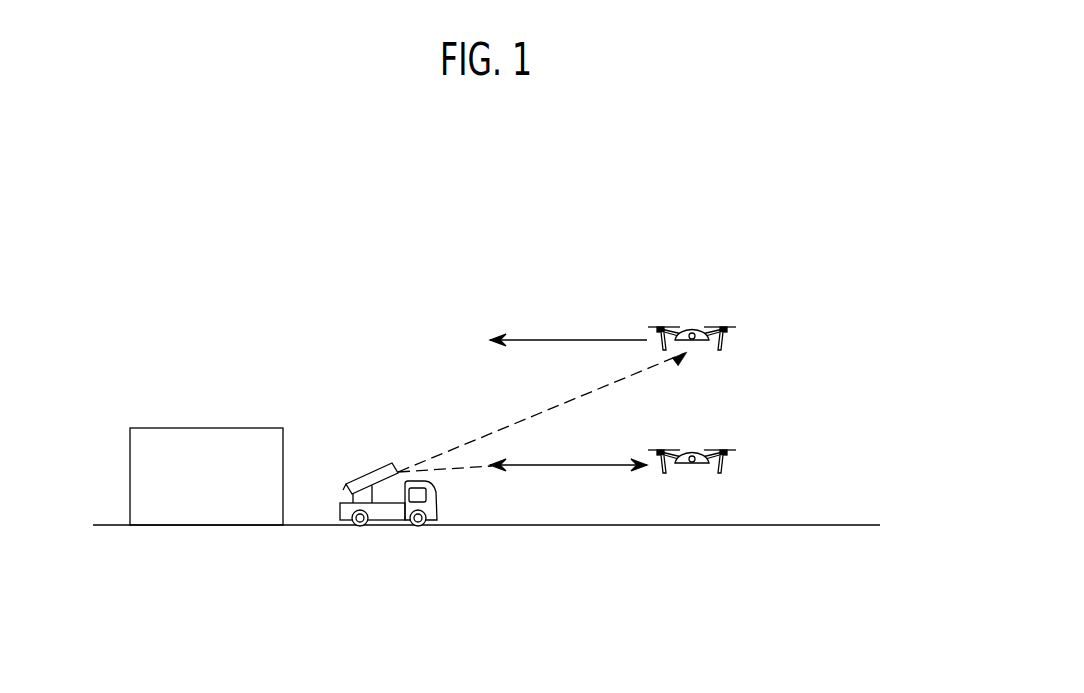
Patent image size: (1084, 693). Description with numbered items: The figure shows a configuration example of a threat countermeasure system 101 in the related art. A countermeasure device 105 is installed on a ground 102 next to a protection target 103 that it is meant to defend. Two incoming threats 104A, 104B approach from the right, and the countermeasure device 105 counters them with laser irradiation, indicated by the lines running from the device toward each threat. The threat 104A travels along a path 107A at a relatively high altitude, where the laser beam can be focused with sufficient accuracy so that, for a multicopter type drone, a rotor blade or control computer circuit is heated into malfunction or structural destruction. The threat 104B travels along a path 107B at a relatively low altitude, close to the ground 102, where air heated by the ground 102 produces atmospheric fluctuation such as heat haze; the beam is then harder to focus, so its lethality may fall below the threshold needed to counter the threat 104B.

The threat countermeasure system 101 is at (758, 172).
The ground 102 is at (610, 526).
The protection target 103 is at (203, 526).
The threat 104A is at (736, 334).
The threat 104B is at (736, 459).
The countermeasure device 105 is at (390, 528).
The path 107A is at (586, 338).
The path 107B is at (573, 462).